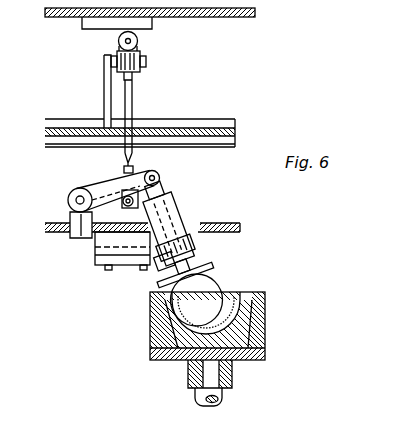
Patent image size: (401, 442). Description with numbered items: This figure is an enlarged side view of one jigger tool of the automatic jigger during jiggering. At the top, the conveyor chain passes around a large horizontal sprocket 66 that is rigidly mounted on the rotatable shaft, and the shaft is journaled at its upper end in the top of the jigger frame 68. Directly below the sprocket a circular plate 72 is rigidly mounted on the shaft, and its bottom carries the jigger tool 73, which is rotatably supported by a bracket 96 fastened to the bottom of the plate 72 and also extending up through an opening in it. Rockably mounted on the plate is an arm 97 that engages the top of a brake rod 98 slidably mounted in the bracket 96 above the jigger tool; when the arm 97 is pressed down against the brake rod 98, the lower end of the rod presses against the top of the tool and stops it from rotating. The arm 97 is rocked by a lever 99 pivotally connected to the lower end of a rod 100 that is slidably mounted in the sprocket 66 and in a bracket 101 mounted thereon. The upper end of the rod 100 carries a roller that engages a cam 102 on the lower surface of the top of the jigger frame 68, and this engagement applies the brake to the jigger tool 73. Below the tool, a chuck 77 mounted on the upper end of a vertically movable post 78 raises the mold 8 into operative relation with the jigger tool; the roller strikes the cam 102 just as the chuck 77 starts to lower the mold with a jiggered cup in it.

The support plate 68 is at (234, 17).
The cam 102 is at (97, 28).
The bracket 101 is at (104, 92).
The rod 100 is at (133, 105).
The sprocket 66 is at (228, 120).
The arm 97 is at (112, 186).
The lever 99 is at (104, 207).
The circular plate 72 is at (240, 221).
The brake rod 98 is at (174, 219).
The bracket 96 is at (174, 252).
The jigger tool 73 is at (183, 269).
The socket holder 8 is at (265, 300).
The chuck 77 is at (263, 343).
The post 78 is at (222, 396).